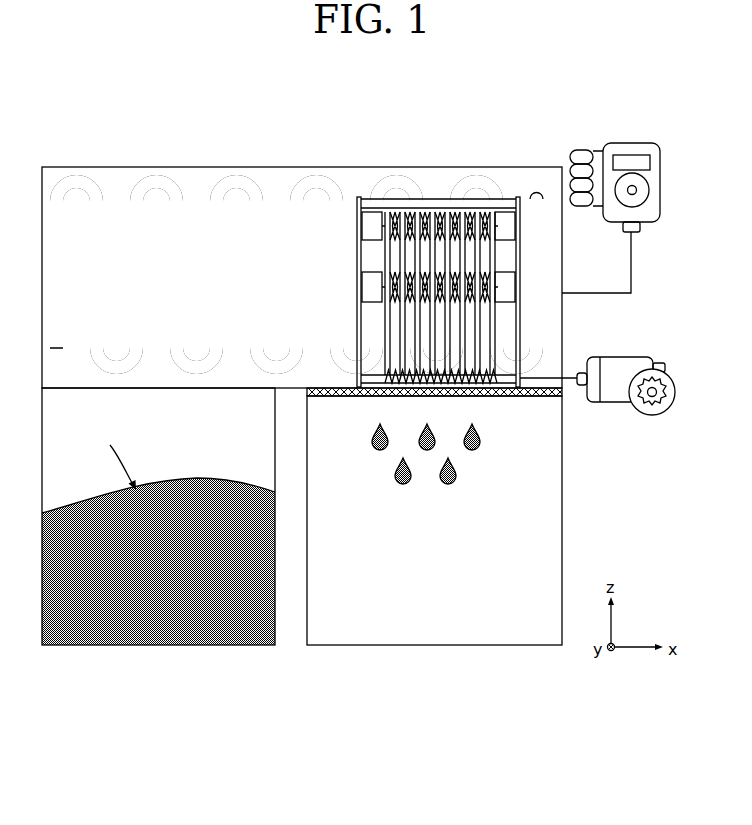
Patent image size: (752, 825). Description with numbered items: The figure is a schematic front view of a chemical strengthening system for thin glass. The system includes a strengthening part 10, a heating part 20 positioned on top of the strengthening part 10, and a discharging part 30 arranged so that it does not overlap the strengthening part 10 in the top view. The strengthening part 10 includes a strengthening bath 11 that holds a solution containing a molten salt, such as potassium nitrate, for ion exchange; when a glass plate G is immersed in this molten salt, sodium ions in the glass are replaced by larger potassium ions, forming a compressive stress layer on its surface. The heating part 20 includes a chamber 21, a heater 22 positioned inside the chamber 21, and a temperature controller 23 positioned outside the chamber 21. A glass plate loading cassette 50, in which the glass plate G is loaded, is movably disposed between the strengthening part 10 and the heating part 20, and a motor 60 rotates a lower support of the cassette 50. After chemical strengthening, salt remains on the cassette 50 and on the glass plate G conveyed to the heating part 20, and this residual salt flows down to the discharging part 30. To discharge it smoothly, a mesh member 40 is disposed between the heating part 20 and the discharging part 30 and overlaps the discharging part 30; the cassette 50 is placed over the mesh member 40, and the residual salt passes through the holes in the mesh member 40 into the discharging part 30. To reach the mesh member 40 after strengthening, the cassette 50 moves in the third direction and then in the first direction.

The strengthening part 10 is at (158, 541).
The strengthening bath 11 is at (157, 645).
The heating part 20 is at (302, 254).
The chamber 21 is at (276, 166).
The heater 22 is at (157, 176).
The temperature controller 23 is at (660, 181).
The discharging part 30 is at (428, 645).
The mesh member 40 is at (532, 398).
The glass plate loading cassette 50 is at (438, 253).
The motor 60 is at (623, 356).
The glass plate G is at (397, 210).